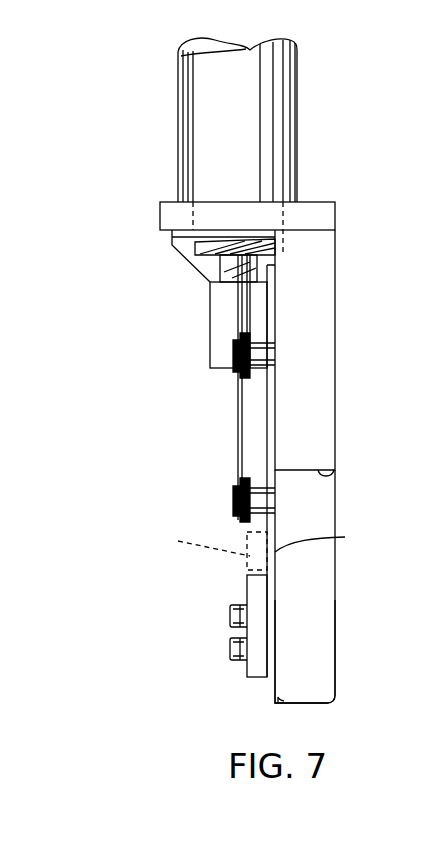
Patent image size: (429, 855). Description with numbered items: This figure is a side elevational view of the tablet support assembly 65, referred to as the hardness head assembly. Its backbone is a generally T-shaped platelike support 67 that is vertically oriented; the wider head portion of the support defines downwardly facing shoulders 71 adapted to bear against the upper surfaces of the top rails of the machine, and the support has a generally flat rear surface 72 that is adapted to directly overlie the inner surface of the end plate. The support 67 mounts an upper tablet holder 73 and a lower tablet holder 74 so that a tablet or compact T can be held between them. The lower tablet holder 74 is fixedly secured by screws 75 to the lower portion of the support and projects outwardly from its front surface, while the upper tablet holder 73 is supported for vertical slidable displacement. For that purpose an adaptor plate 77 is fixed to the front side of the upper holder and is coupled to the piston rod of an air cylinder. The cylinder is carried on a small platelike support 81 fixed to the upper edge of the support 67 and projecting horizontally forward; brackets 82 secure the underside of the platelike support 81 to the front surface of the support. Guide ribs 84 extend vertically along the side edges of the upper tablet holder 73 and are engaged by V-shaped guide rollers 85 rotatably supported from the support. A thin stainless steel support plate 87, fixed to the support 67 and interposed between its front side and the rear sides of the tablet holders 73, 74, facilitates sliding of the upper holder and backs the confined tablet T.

The tablet support assembly 65 is at (342, 327).
The T-shaped platelike support 67 is at (338, 492).
The downwardly facing shoulders 71 is at (335, 476).
The flat rear surface 72 is at (337, 603).
The upper tablet holder 73 is at (258, 443).
The lower tablet holder 74 is at (258, 592).
The screws 75 is at (240, 650).
The adaptor plate 77 is at (210, 325).
The platelike support 81 is at (318, 208).
The brackets 82 is at (178, 250).
The guide ribs 84 is at (237, 425).
The guide rollers 85 is at (232, 373).
The stainless steel support plate 87 is at (326, 539).
The tablet T is at (212, 548).